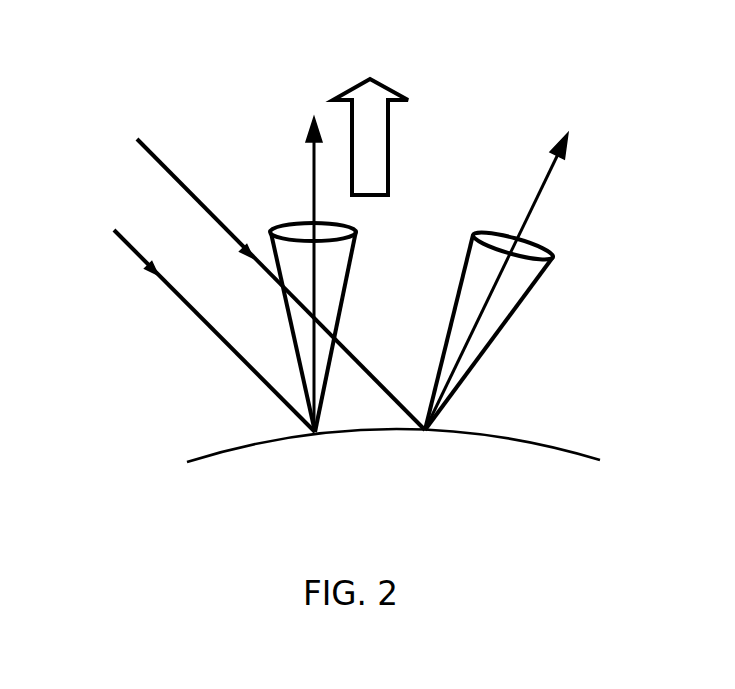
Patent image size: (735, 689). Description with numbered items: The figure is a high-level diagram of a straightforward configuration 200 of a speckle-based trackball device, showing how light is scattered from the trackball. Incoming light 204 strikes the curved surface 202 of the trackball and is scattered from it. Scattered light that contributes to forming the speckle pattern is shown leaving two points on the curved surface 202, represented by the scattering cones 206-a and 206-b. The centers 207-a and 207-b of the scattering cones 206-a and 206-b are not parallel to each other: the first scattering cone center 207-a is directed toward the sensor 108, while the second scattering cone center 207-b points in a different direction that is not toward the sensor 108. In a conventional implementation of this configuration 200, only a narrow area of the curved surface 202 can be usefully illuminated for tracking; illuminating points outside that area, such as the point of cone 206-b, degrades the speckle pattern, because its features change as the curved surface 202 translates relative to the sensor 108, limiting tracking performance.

The configuration 200 is at (404, 320).
The curved surface 202 is at (393, 480).
The incoming light 204 is at (259, 285).
The scattering cone 206-a is at (328, 292).
The scattering cone center 207-a is at (323, 220).
The scattering cone 206-b is at (510, 319).
The scattering cone center 207-b is at (530, 238).
The sensor 108 is at (401, 111).